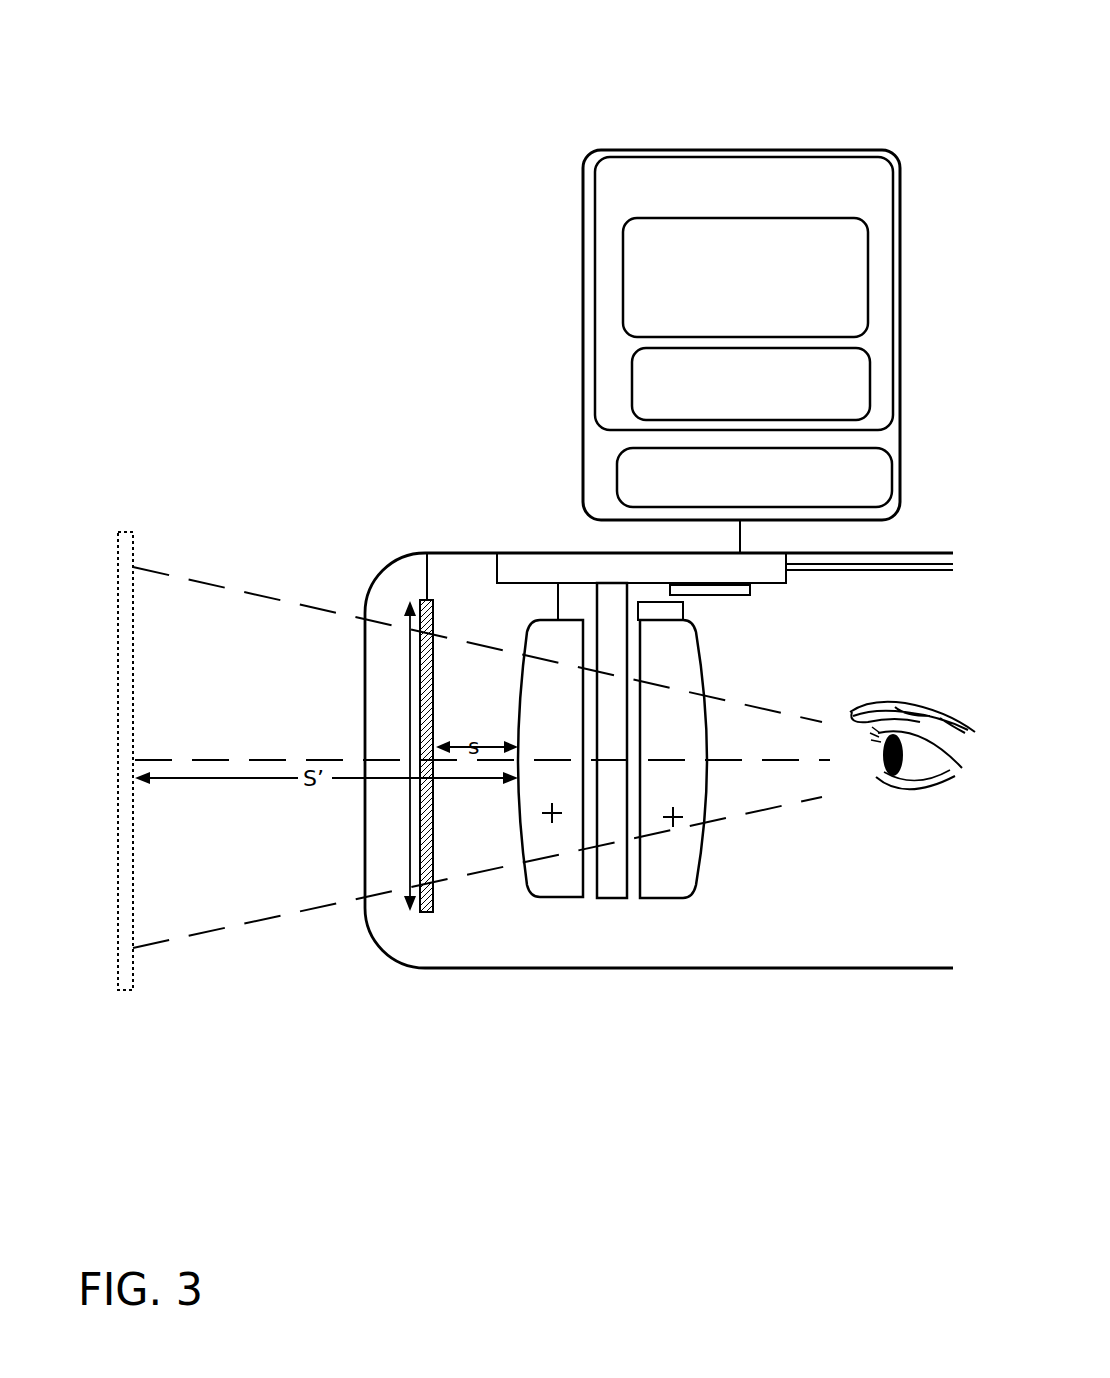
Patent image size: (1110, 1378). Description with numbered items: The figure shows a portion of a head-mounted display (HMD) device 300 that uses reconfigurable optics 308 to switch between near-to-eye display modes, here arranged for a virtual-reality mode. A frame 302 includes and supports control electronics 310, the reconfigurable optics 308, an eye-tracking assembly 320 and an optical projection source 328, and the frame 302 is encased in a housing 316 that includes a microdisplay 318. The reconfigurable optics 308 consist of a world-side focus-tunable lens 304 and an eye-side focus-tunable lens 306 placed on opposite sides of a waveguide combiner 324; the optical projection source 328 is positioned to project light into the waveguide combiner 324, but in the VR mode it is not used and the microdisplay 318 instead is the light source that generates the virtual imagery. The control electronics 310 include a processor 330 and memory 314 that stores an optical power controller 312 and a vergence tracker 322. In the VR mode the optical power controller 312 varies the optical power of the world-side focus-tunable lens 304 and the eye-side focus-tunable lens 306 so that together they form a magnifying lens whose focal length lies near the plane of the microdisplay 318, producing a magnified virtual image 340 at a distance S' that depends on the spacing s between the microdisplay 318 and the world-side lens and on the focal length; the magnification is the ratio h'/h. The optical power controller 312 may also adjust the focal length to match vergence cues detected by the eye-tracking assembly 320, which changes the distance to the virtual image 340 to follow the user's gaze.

The head-mounted display device 300 is at (143, 72).
The frame 302 is at (858, 571).
The world-side focus-tunable lens 304 is at (566, 897).
The eye-side focus-tunable lens 306 is at (668, 898).
The reconfigurable optics 308 is at (727, 884).
The control electronics 310 is at (813, 150).
The optical power controller 312 is at (745, 277).
The memory 314 is at (744, 293).
The housing 316 is at (430, 553).
The microdisplay 318 is at (421, 638).
The eye-tracking assembly 320 is at (683, 611).
The vergence tracker 322 is at (751, 384).
The waveguide combiner 324 is at (612, 898).
The optical projection source 328 is at (750, 592).
The processor 330 is at (754, 477).
The virtual image 340 is at (133, 628).